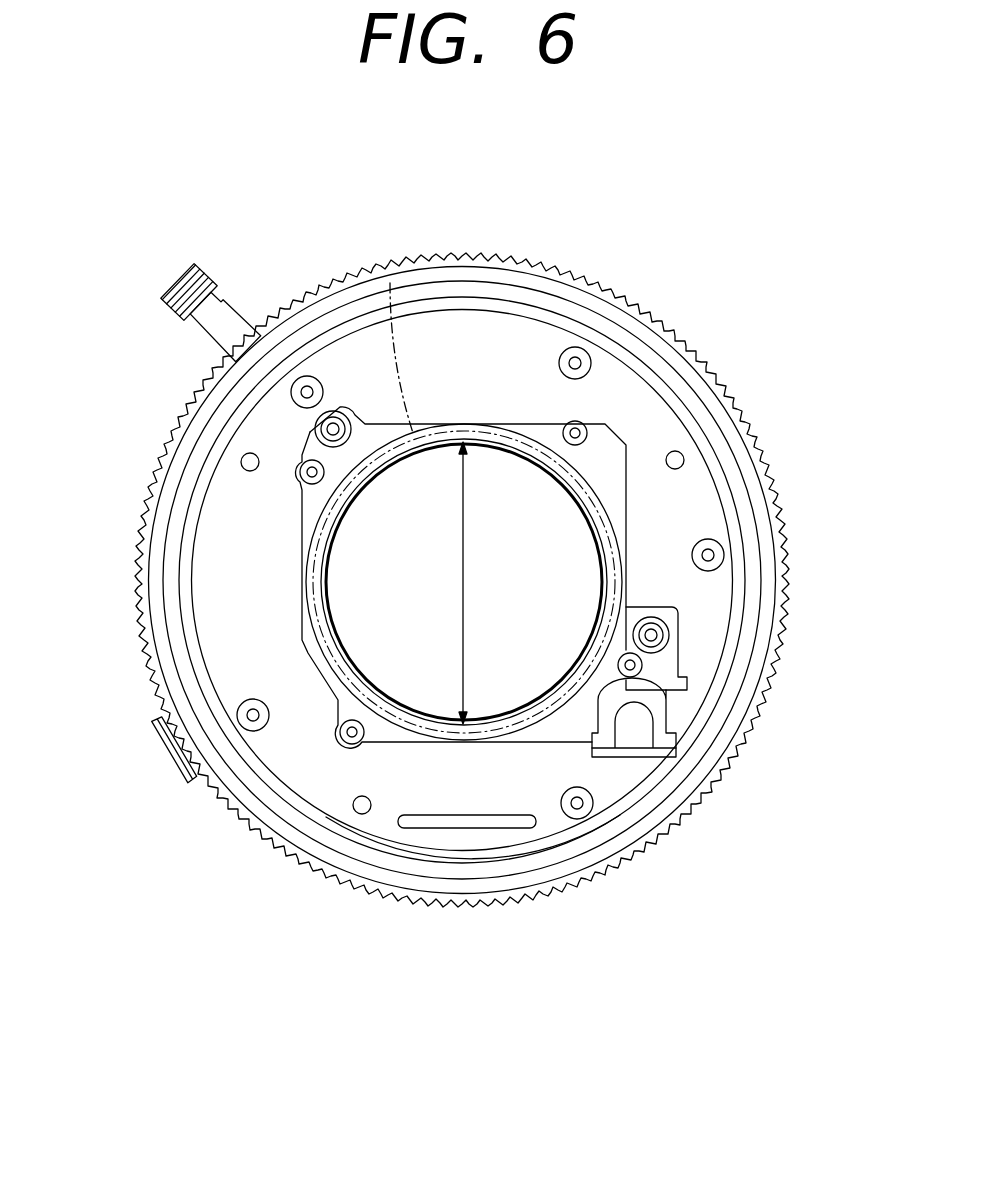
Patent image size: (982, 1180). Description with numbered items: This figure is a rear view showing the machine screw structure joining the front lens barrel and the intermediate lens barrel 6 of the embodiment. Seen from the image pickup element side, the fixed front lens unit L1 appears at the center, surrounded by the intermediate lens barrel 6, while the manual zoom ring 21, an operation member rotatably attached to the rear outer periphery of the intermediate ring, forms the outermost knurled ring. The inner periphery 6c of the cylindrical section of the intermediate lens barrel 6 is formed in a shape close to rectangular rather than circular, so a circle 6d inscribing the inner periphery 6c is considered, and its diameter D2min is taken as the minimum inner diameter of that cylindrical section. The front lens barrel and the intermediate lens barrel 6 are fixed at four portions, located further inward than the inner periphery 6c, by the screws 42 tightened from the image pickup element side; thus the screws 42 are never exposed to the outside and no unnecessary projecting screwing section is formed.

The manual zoom ring 21 is at (752, 745).
The intermediate lens barrel 6 is at (617, 383).
The inner periphery 6c is at (463, 424).
The circle inscribing the inner periphery 6d is at (390, 283).
The screws 42 is at (575, 421).
The front lens unit L1 is at (532, 508).
The minimum diameter D2min is at (463, 540).